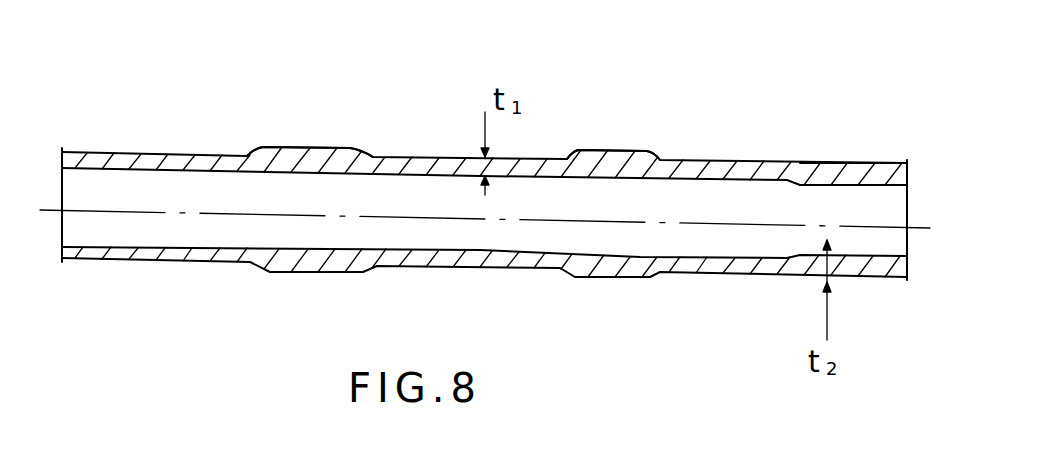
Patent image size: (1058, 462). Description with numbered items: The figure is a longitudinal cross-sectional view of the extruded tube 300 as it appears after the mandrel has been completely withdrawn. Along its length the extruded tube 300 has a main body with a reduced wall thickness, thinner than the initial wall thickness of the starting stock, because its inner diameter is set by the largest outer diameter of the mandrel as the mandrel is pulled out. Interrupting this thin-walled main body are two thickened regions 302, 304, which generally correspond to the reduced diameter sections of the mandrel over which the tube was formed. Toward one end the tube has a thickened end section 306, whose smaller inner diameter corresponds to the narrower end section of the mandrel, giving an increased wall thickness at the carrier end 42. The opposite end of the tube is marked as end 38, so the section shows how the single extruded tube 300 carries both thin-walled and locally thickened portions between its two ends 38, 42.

The extruded tube 300 is at (840, 116).
The thickened region 302 is at (340, 150).
The thickened region 304 is at (620, 160).
The thickened end section 306 is at (864, 172).
The first end 38 is at (79, 260).
The carrier end 42 is at (893, 268).